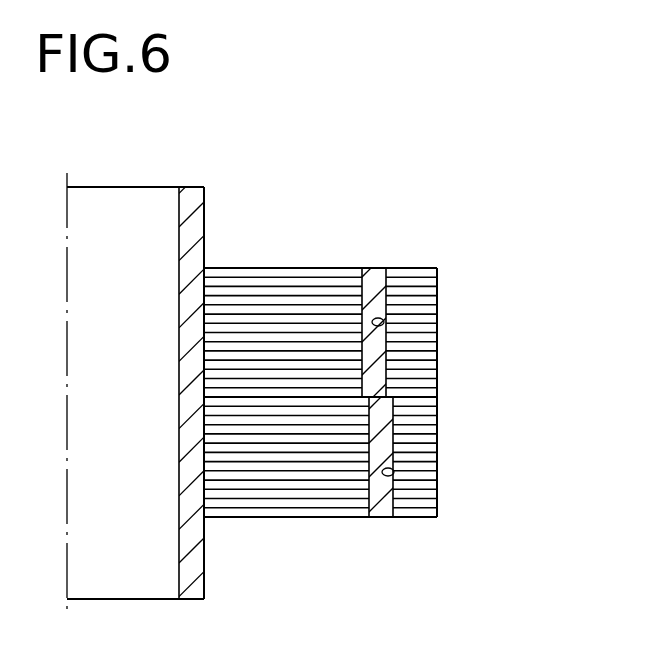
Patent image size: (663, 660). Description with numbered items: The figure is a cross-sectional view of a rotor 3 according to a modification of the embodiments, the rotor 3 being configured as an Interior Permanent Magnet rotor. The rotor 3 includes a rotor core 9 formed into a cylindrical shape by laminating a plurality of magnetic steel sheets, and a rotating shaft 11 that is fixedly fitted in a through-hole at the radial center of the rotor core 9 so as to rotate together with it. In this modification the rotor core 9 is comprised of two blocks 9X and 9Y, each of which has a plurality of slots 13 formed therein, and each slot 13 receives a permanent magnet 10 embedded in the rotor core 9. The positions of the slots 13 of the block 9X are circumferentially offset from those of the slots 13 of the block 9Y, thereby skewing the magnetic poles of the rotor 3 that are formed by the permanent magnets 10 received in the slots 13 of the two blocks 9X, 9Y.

The rotor 3 is at (463, 225).
The rotor core 9 is at (502, 342).
The block 9X is at (437, 360).
The block 9Y is at (437, 420).
The permanent magnet 10 is at (373, 267).
The rotating shaft 11 is at (192, 582).
The slot 13 is at (384, 322).